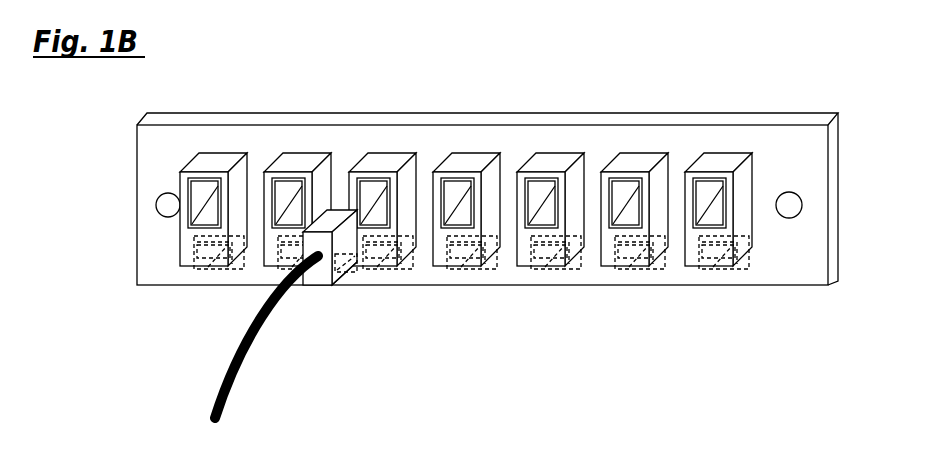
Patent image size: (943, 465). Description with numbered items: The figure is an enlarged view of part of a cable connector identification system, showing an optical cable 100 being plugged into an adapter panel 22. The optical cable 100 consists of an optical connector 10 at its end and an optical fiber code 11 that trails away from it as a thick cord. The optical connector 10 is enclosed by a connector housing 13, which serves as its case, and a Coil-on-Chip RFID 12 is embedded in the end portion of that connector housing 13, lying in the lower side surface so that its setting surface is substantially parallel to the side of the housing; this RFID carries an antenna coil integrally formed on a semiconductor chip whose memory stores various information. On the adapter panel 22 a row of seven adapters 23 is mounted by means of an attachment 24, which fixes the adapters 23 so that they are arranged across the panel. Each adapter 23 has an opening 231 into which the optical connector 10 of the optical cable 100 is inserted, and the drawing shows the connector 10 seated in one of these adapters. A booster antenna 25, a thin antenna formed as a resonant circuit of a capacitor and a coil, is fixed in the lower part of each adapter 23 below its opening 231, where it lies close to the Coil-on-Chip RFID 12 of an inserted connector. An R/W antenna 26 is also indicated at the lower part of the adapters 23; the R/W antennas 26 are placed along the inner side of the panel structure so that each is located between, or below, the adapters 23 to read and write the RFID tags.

The optical fiber cable 100 is at (269, 318).
The optical fiber connector 10 is at (317, 279).
The optical fiber code 11 is at (243, 403).
The Coil-on-Chip RFID 12 is at (335, 281).
The connector housing 13 is at (352, 239).
The adapter panel 22 is at (487, 180).
The adapter 23 is at (560, 160).
The opening 231 is at (612, 195).
The attachment 24 is at (340, 132).
The booster antenna 25 is at (630, 268).
The R/W antenna 26 is at (732, 270).